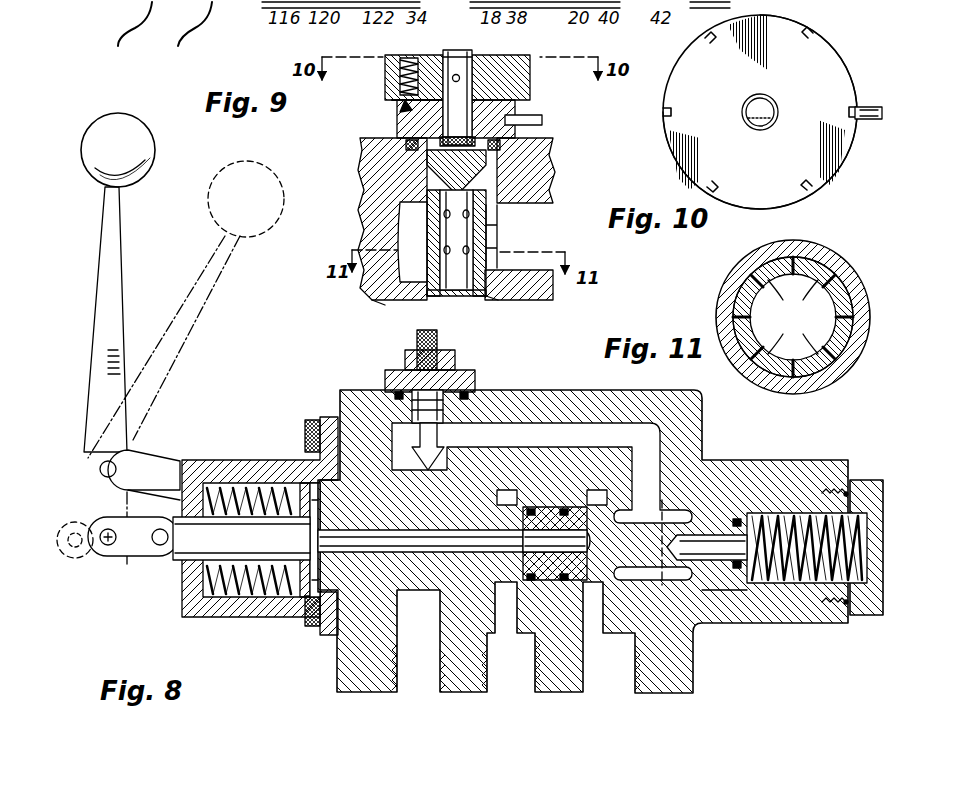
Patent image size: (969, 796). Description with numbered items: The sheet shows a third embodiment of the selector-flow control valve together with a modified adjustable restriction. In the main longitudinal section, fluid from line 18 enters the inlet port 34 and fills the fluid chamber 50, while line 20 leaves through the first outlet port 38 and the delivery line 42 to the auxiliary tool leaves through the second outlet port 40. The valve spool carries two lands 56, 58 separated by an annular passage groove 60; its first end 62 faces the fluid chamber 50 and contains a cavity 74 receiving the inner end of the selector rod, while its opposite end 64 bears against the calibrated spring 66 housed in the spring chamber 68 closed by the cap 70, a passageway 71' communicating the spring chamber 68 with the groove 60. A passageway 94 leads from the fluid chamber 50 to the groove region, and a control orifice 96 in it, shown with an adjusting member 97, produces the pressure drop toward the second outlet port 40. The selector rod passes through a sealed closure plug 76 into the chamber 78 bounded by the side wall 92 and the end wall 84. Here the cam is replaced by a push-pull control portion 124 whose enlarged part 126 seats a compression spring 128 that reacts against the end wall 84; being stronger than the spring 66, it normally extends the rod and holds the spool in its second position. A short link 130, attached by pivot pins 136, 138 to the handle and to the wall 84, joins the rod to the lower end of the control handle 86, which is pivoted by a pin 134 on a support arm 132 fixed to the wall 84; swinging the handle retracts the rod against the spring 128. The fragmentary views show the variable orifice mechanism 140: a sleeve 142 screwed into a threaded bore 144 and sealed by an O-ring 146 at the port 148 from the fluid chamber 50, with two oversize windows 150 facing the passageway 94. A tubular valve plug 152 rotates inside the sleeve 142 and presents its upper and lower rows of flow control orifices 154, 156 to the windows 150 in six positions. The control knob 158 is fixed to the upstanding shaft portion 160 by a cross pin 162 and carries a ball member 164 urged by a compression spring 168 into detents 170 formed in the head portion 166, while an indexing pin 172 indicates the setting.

In FIG. 8, the control handle 86 is at (90, 282).
In FIG. 8, the support arm 132 is at (145, 463).
In FIG. 8, the pivot pin 134 is at (100, 469).
In FIG. 8, the short link 130 is at (135, 550).
In FIG. 8, the pivot pin 136 is at (100, 547).
In FIG. 8, the pivot pin 138 is at (160, 547).
In FIG. 8, the end wall 84 is at (186, 600).
In FIG. 8, the side wall 92 is at (204, 462).
In FIG. 8, the closure plug 76 is at (312, 620).
In FIG. 8, the chamber 78 is at (238, 598).
In FIG. 8, the compression spring 128 is at (300, 486).
In FIG. 8, the enlarged part 126 is at (312, 482).
In FIG. 8, the push-pull control portion 124 is at (232, 543).
In FIG. 8, the cap 70 is at (862, 617).
In FIG. 8, the spring chamber 68 is at (772, 584).
In FIG. 8, the calibrated spring 66 is at (812, 620).
In FIG. 8, the opposite end of valve spool 64 is at (740, 622).
In FIG. 9, the passageway 94 is at (540, 246).
In FIG. 8, the passageway 94 is at (532, 440).
In FIG. 8, the control orifice 96 is at (448, 450).
In FIG. 8, the annular passage groove 60 is at (672, 510).
In FIG. 8, the land 56 is at (565, 502).
In FIG. 8, the adjusting screw 97 is at (440, 446).
In FIG. 8, the first end of valve spool 62 is at (522, 522).
In FIG. 8, the fluid chamber 50 is at (438, 583).
In FIG. 8, the cavity 74 is at (560, 560).
In FIG. 8, the passageway 71' is at (716, 498).
In FIG. 8, the land 58 is at (738, 512).
In FIG. 8, the inlet port 34 is at (396, 688).
In FIG. 8, the line 18 is at (415, 676).
In FIG. 8, the first outlet port 38 is at (494, 688).
In FIG. 8, the line 20 is at (515, 718).
In FIG. 8, the second outlet port 40 is at (586, 688).
In FIG. 8, the delivery line 42 is at (610, 668).
In FIG. 9, the variable orifice mechanism 140 is at (394, 173).
In FIG. 9, the threaded bore 144 is at (412, 185).
In FIG. 9, the tubular housing or sleeve 142 is at (422, 216).
In FIG. 11, the tubular housing or sleeve 142 is at (735, 278).
In FIG. 9, the upper row of flow control orifices 154 is at (456, 240).
In FIG. 9, the lower row of flow control orifices 156 is at (476, 256).
In FIG. 11, the lower row of flow control orifices 156 is at (836, 317).
In FIG. 9, the windows 150 is at (500, 212).
In FIG. 9, the O-ring 146 is at (398, 300).
In FIG. 9, the port 148 is at (458, 298).
In FIG. 9, the head portion 166 is at (398, 130).
In FIG. 9, the detent 170 is at (400, 112).
In FIG. 9, the control knob 158 is at (515, 98).
In FIG. 10, the control knob 158 is at (698, 137).
In FIG. 9, the compression spring 168 is at (400, 76).
In FIG. 9, the ball member 164 is at (398, 100).
In FIG. 9, the upstanding shaft portion 160 is at (466, 92).
In FIG. 10, the upstanding shaft portion 160 is at (756, 107).
In FIG. 9, the cross pin 162 is at (462, 78).
In FIG. 9, the indexing pin 172 is at (540, 122).
In FIG. 10, the indexing pin 172 is at (868, 122).
In FIG. 11, the tubular valve plug 152 is at (840, 285).